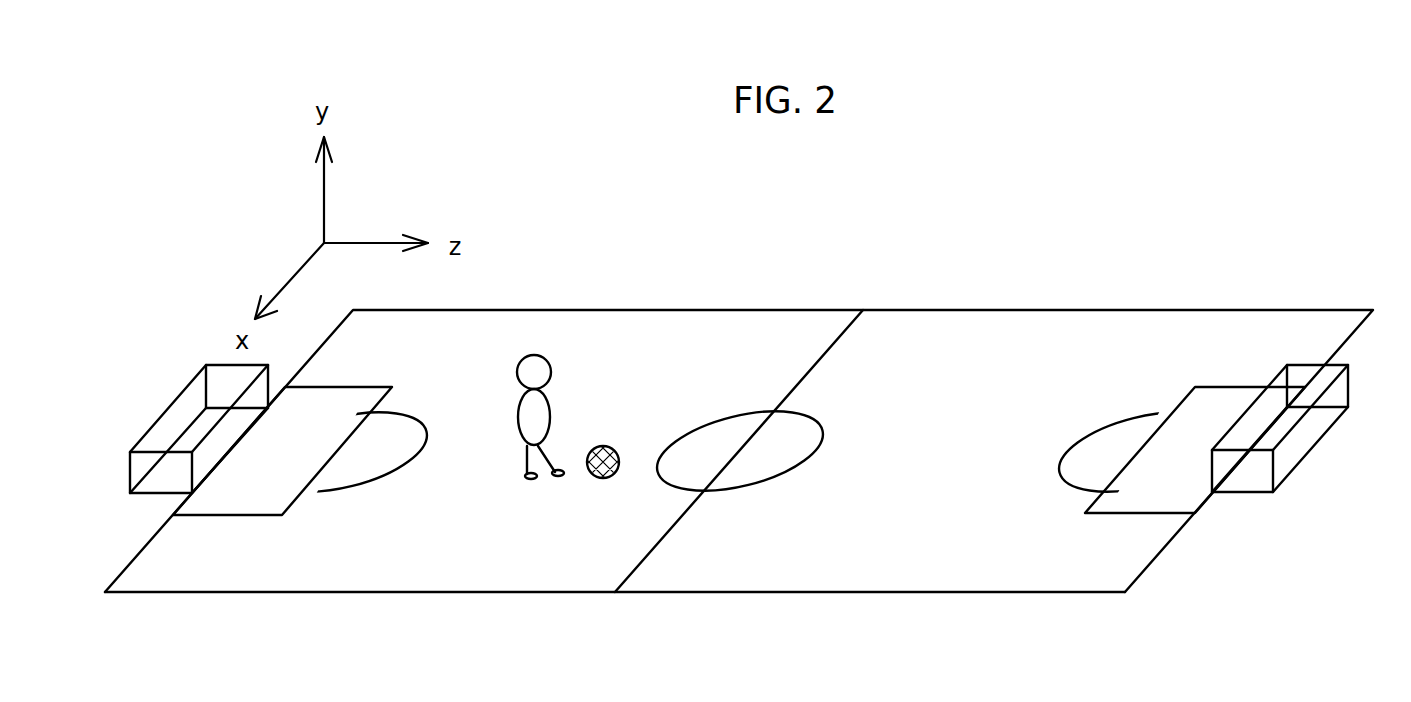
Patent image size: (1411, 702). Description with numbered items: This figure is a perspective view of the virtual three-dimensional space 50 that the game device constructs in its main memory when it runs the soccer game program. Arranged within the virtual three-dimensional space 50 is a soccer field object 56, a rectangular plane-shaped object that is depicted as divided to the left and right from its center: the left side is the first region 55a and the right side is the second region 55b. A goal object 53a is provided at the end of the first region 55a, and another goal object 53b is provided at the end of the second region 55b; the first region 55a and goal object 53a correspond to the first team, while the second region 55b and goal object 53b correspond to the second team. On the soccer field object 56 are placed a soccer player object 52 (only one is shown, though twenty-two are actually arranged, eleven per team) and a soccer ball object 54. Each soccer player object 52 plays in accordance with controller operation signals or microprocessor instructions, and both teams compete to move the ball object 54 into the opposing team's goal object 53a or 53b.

The virtual three-dimensional space 50 is at (850, 224).
The soccer player object 52 is at (518, 413).
The goal object 53a is at (156, 421).
The goal object 53b is at (1310, 452).
The soccer ball object 54 is at (607, 445).
The first region 55a is at (421, 563).
The second region 55b is at (913, 563).
The soccer field object 56 is at (470, 592).